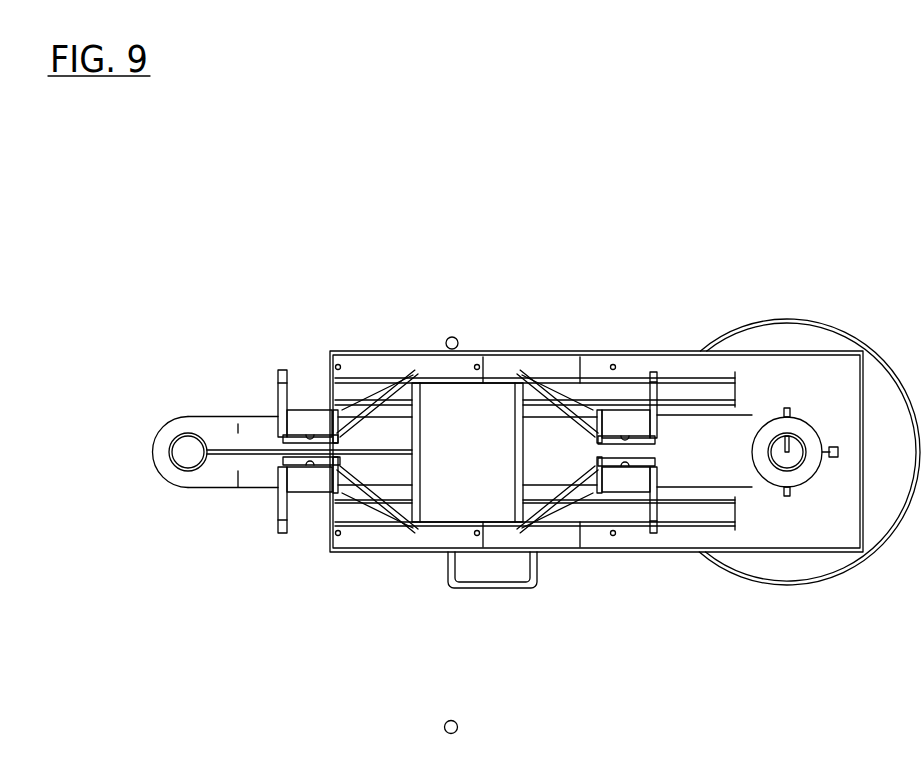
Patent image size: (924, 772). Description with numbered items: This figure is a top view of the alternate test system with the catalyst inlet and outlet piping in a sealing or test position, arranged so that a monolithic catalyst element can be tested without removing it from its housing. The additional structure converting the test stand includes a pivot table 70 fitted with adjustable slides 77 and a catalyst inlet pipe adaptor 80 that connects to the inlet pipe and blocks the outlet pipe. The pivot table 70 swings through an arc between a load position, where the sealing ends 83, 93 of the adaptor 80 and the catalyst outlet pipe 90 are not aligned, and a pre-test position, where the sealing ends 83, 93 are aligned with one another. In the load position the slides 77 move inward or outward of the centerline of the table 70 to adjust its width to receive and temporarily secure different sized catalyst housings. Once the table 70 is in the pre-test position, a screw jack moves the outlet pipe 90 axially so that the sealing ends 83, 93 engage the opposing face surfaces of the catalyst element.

The pivot table 70 is at (373, 550).
The slides 77 is at (620, 378).
The catalyst inlet pipe adaptor 80 is at (689, 416).
The gasket or sealing end 83 is at (515, 447).
The catalyst outlet pipe 90 is at (252, 420).
The gasket or sealing end 93 is at (418, 455).